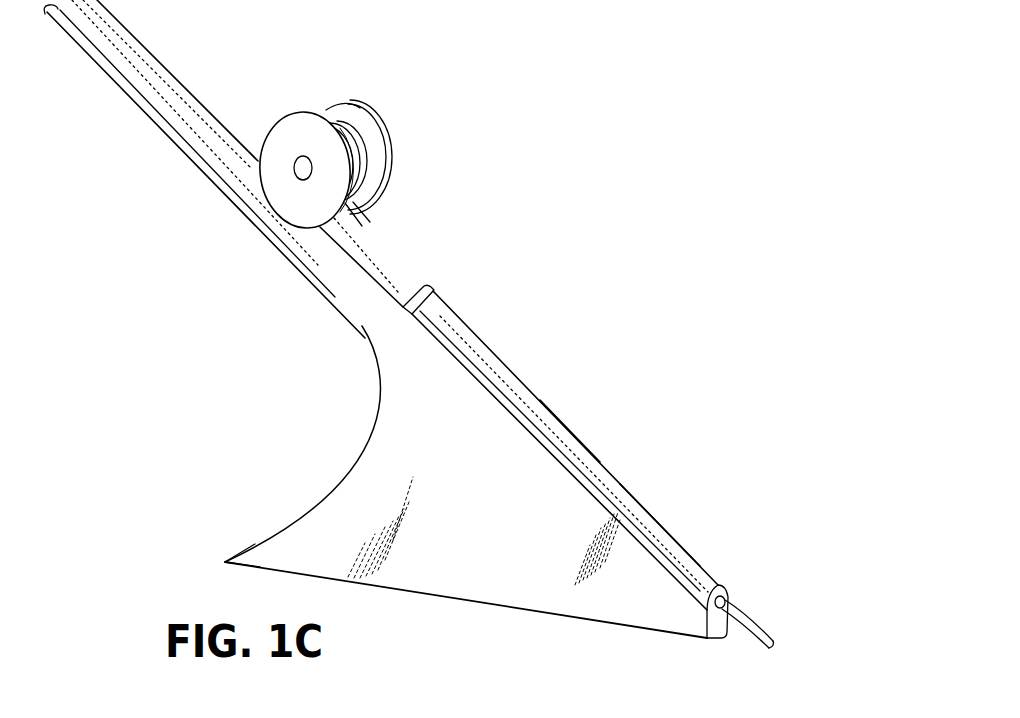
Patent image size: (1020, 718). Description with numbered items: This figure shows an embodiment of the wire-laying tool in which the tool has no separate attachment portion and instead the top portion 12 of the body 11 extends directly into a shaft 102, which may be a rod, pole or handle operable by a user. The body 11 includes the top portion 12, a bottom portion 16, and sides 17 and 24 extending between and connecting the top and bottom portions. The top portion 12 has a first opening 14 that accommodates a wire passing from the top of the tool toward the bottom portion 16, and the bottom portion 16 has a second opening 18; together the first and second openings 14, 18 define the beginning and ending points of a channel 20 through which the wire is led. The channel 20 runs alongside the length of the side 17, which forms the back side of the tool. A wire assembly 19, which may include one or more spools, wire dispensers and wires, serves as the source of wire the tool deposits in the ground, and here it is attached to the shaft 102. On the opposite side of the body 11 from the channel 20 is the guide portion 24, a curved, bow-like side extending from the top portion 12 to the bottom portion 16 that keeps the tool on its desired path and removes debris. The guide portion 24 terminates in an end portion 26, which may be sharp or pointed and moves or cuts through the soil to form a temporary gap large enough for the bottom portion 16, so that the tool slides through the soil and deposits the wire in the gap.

The shaft 102 is at (180, 83).
The wire assembly 19 is at (365, 130).
The first opening 14 is at (424, 285).
The body 11 is at (443, 400).
The channel 20 is at (567, 447).
The side 17 is at (643, 527).
The second opening 18 is at (730, 596).
The bottom portion 16 is at (497, 603).
The guide portion 24 is at (350, 467).
The end portion 26 is at (225, 562).
The top portion 12 is at (384, 317).